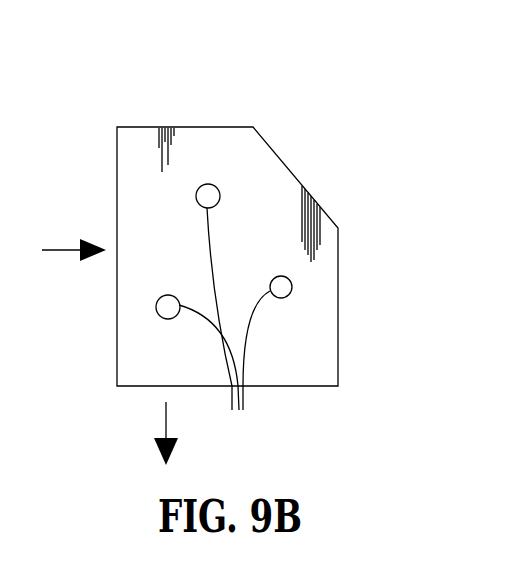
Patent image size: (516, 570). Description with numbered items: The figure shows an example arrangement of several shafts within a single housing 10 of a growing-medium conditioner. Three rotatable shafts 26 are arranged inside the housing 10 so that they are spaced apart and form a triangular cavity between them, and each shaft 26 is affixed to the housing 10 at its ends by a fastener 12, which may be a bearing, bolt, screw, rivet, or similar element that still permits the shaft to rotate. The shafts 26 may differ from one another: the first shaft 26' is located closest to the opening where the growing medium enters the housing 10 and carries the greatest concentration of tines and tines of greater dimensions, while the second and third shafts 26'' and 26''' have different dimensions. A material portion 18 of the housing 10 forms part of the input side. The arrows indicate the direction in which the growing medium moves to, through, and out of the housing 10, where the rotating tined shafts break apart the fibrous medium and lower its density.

The housing 10 is at (241, 95).
The material portion 18 is at (89, 280).
The fastener 12 is at (228, 326).
The shaft 26 is at (228, 326).
The first shaft 26' is at (259, 167).
The second shaft 26'' is at (325, 237).
The third shaft 26''' is at (116, 329).